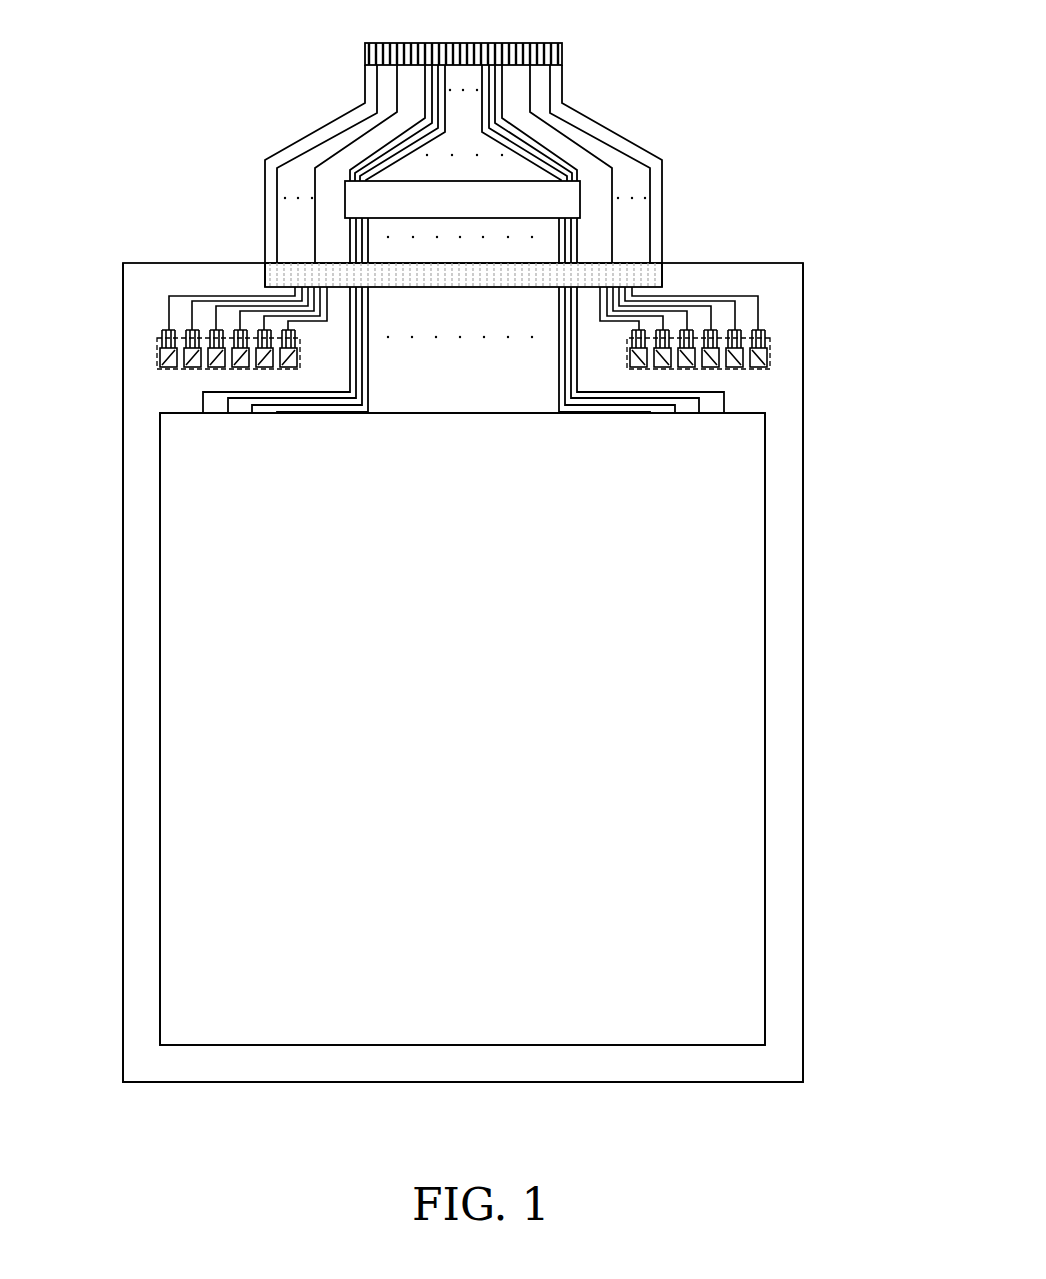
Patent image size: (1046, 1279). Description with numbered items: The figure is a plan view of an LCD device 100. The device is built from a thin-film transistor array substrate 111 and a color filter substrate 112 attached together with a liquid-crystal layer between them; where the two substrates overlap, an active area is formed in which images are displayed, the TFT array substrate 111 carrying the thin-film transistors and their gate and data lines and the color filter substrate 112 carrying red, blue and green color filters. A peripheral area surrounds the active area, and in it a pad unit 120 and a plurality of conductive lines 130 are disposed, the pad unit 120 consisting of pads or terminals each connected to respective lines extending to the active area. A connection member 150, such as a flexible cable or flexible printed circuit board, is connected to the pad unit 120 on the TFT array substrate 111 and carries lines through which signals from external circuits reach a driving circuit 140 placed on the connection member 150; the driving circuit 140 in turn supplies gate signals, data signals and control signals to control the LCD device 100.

The LCD device 100 is at (797, 24).
The thin-film transistor (TFT) array substrate 111 is at (803, 395).
The color filter substrate 112 is at (765, 490).
The pad unit 120 is at (157, 350).
The conductive lines 130 is at (185, 296).
The driving circuit 140 is at (580, 192).
The connection member 150 is at (318, 131).